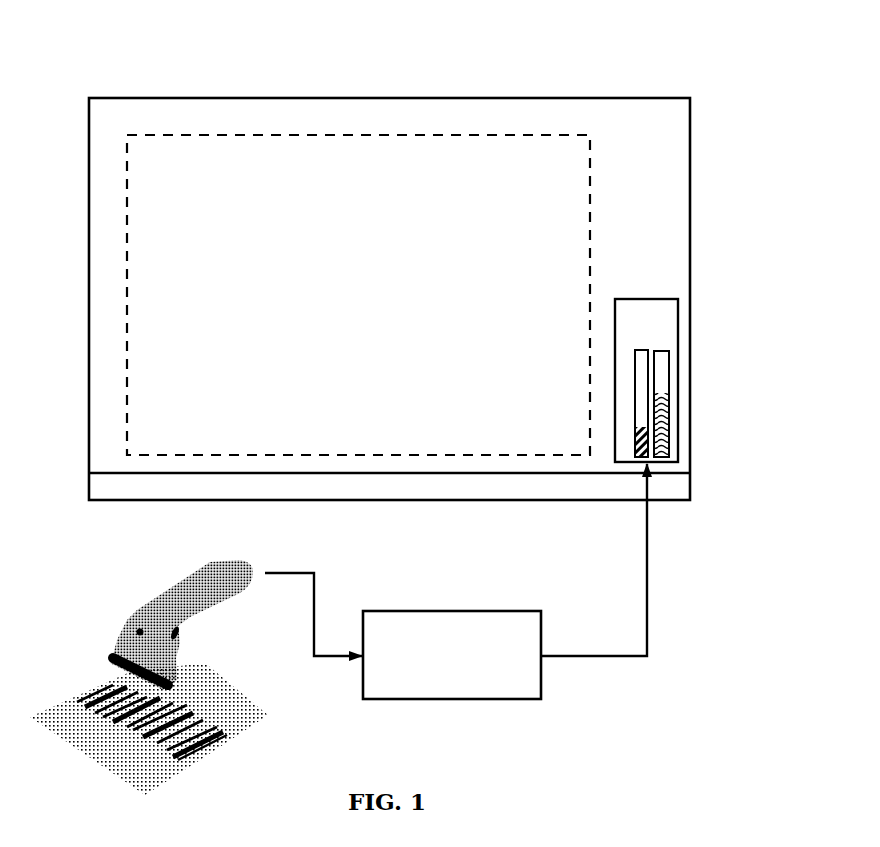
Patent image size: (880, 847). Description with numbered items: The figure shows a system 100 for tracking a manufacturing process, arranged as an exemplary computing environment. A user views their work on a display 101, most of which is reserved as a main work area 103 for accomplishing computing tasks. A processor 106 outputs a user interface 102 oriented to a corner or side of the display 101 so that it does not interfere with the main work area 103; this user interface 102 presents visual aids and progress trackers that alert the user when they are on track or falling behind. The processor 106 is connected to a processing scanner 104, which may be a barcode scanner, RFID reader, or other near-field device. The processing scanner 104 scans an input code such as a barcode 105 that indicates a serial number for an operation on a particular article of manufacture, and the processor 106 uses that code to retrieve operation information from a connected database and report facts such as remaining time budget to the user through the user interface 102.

The system 100 is at (697, 72).
The display 101 is at (658, 162).
The user interface 102 is at (679, 326).
The main work area 103 is at (591, 242).
The processing scanner 104 is at (238, 562).
The barcode 105 is at (220, 694).
The processor 106 is at (458, 612).